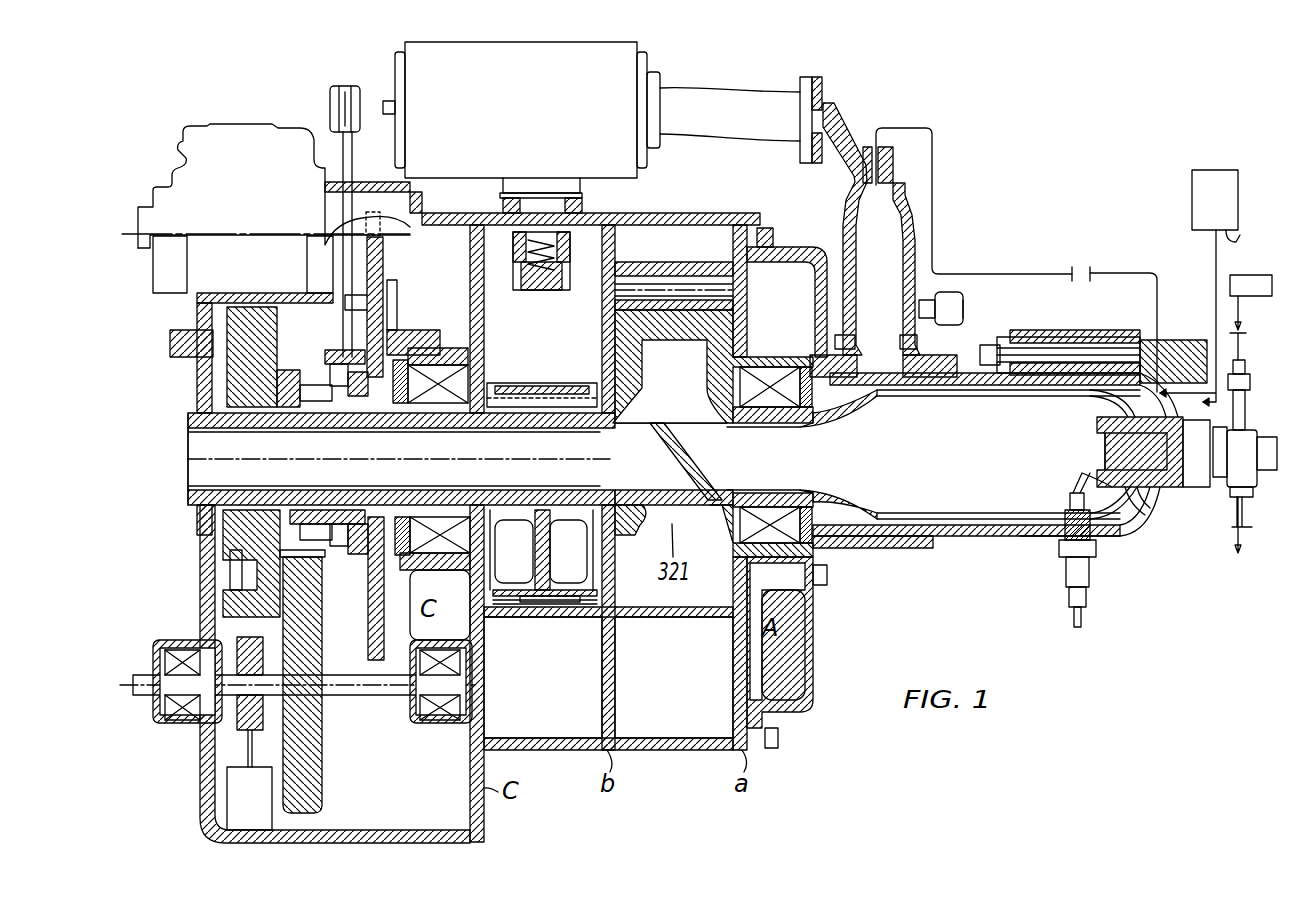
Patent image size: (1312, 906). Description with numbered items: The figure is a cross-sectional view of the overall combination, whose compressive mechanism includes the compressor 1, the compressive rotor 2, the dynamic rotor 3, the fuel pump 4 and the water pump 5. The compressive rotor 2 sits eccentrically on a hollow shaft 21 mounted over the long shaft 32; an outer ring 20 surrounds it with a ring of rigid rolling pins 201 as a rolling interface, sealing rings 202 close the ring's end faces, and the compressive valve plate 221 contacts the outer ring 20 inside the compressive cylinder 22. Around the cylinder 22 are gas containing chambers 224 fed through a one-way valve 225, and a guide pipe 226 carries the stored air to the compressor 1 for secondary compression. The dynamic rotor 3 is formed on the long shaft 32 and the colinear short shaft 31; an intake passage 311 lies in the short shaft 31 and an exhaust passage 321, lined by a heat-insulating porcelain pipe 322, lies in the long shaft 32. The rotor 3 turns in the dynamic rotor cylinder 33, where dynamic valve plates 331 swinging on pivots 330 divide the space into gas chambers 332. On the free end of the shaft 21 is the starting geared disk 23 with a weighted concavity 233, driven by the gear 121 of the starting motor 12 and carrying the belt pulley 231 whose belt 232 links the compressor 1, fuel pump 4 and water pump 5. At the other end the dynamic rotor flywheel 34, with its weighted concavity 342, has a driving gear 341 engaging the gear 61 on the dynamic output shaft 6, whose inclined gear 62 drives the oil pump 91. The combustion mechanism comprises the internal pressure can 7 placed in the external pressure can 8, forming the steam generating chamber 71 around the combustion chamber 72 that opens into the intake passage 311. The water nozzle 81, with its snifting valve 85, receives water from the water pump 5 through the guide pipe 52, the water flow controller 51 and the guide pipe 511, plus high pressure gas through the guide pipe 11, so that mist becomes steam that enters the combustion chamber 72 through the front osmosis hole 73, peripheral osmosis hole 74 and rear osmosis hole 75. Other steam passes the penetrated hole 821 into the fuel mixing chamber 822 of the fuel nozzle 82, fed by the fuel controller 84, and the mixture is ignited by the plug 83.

The compressor 1 is at (558, 48).
The guide pipe 11 is at (716, 90).
The starting motor 12 is at (213, 127).
The gear 121 is at (362, 218).
The belt 232 is at (338, 132).
The guide pipe 226 is at (522, 188).
The one-way valve 225 is at (582, 235).
The compressive cylinder 22 is at (470, 264).
The weighted concavity 233 is at (372, 272).
The compressive valve plate 221 is at (470, 322).
The hollow shaft 21 is at (432, 385).
The sealing ring 202 is at (588, 383).
The dynamic valve plate 331 is at (643, 262).
The pivot 330 is at (679, 288).
The dynamic rotor 3 is at (712, 335).
The intake passage 311 is at (745, 350).
The water nozzle 81 is at (868, 145).
The guide pipe 511 is at (936, 220).
The snifting valve 85 is at (965, 306).
The water flow controller 51 is at (1065, 335).
The water pump 5 is at (1192, 216).
The guide pipe 52 is at (1214, 280).
The fuel pump 4 is at (1260, 275).
The dynamic rotor flywheel 34 is at (200, 330).
The driving gear 341 is at (293, 370).
The belt pulley 231 is at (328, 350).
The long shaft 32 is at (230, 436).
The exhaust passage 321 is at (200, 470).
The heat-insulating porcelain pipe 322 is at (327, 430).
The short shaft 31 is at (785, 430).
The rear osmosis hole 75 is at (848, 405).
The peripheral osmosis hole 74 is at (938, 397).
The front osmosis hole 73 is at (1122, 417).
The fuel nozzle 82 is at (1096, 453).
The fuel mixing chamber 822 is at (1110, 458).
The penetrated hole 821 is at (1140, 502).
The fuel controller 84 is at (1250, 470).
The plug 83 is at (1090, 585).
The external pressure can 8 is at (1012, 537).
The internal pressure can 7 is at (968, 536).
The steam generating chamber 71 is at (935, 537).
The combustion chamber 72 is at (985, 537).
The weighted concavity 342 is at (235, 574).
The starting geared disk 23 is at (385, 630).
The inclined gear 62 is at (245, 707).
The dynamic output shaft 6 is at (380, 695).
The gear 61 is at (325, 767).
The oil pump 91 is at (230, 795).
The compressive rotor 2 is at (526, 618).
The rolling pins 201 is at (546, 600).
The outer ring 20 is at (586, 604).
The dynamic rotor cylinder 33 is at (628, 617).
The gas chamber 332 is at (668, 605).
The gas containing chamber 224 is at (558, 750).